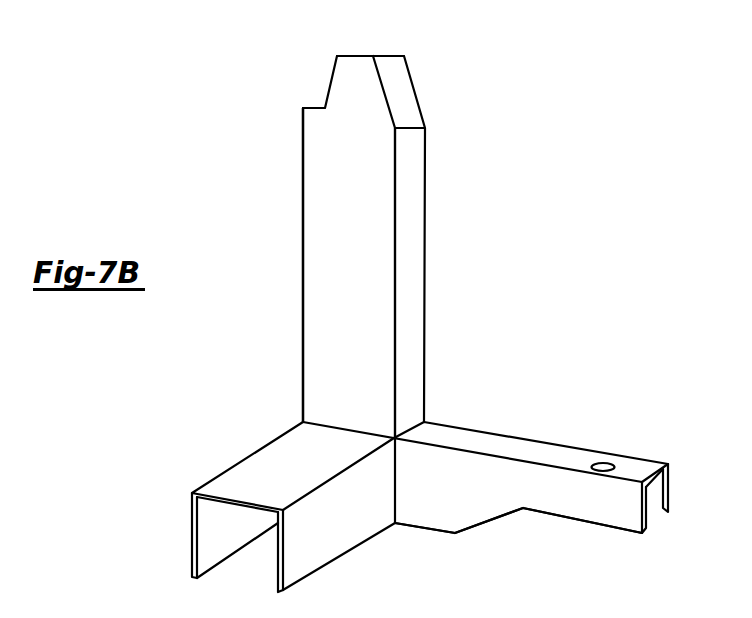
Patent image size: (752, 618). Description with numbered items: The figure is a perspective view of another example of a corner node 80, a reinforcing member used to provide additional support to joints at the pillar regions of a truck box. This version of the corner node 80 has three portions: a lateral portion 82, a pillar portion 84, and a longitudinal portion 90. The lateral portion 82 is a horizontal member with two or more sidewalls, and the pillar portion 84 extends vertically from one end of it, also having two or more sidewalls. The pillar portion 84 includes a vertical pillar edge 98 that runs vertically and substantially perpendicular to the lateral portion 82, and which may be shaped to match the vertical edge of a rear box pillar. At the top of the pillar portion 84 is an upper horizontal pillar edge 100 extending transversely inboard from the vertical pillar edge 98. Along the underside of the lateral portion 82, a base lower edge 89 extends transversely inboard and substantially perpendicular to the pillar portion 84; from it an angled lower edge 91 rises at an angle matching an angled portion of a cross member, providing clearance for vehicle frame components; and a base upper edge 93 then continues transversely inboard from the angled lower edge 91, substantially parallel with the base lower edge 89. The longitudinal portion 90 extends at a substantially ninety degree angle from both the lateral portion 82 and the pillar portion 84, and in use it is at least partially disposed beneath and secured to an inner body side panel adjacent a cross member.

The corner node 80 is at (412, 82).
The upper horizontal pillar edge 100 is at (337, 56).
The pillar portion 84 is at (320, 179).
The vertical pillar edge 98 is at (302, 253).
The longitudinal portion 90 is at (265, 478).
The lateral portion 82 is at (523, 437).
The base lower edge 89 is at (420, 528).
The angled lower edge 91 is at (485, 525).
The base upper edge 93 is at (593, 523).